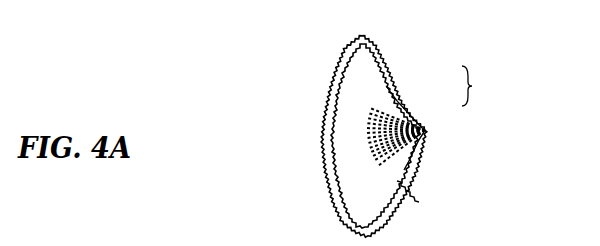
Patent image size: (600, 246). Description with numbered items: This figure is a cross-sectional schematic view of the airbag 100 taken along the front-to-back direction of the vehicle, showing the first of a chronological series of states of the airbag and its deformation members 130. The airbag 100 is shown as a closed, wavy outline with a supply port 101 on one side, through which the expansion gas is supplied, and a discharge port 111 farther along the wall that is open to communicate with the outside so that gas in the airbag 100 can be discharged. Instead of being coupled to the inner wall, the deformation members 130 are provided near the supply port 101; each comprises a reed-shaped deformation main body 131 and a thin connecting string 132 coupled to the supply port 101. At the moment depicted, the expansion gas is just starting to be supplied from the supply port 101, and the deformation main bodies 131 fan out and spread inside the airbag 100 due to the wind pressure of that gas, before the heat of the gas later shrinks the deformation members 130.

The airbag 100 is at (390, 137).
The supply port 101 is at (430, 129).
The discharge port 111 is at (412, 196).
The deformation members 130 is at (480, 86).
The deformation main body 131 is at (410, 82).
The connecting string 132 is at (410, 106).